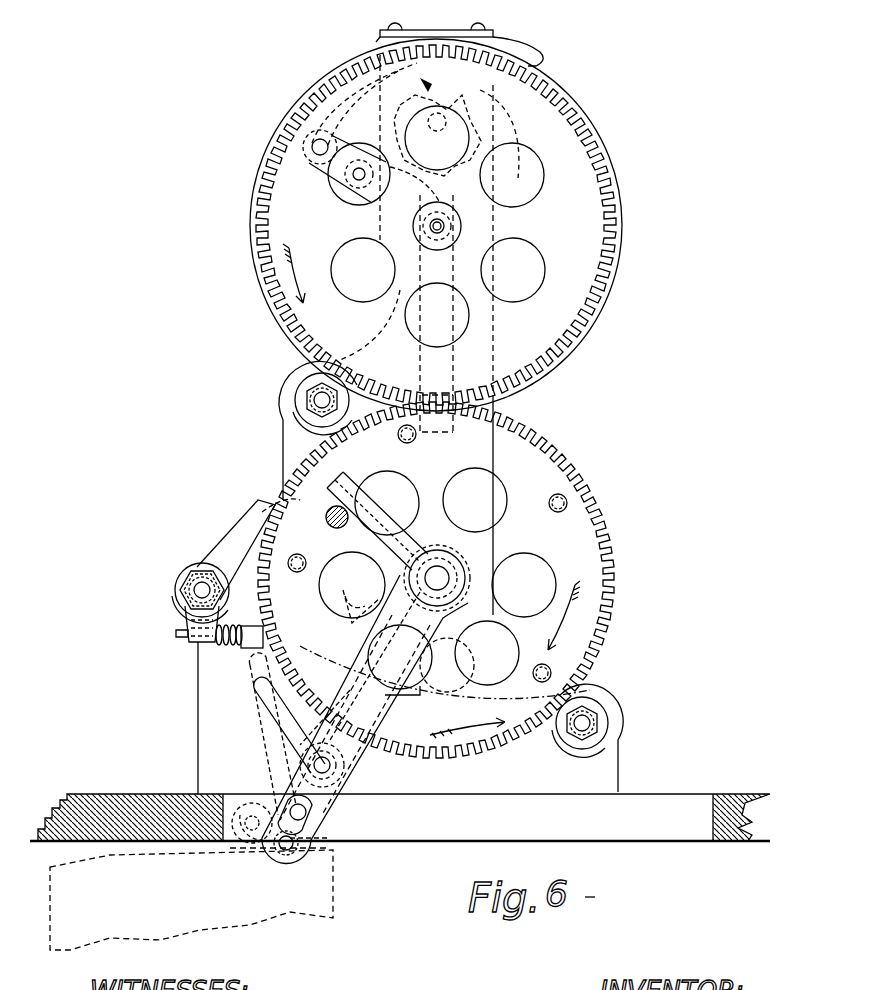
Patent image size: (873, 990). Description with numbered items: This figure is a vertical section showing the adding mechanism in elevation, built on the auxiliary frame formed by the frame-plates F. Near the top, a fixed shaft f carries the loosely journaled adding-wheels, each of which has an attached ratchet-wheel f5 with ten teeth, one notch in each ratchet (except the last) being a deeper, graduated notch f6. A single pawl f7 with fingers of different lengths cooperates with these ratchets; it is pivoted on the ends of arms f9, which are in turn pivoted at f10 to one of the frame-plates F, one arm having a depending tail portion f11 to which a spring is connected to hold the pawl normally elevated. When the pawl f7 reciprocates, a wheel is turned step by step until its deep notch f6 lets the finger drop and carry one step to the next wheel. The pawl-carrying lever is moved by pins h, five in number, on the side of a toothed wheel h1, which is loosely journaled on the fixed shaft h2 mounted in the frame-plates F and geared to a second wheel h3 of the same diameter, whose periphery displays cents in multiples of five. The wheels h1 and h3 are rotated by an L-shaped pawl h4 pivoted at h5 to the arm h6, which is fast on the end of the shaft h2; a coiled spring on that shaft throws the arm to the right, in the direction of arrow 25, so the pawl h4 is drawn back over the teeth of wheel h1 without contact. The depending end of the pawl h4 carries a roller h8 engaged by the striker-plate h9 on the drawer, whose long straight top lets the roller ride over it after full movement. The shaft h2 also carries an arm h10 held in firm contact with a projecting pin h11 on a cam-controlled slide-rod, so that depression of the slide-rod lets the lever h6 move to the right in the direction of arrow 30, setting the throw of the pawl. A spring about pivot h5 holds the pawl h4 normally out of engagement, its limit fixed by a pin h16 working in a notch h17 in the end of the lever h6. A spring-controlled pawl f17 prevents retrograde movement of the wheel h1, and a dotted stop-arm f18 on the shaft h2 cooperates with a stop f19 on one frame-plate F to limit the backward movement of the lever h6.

The fixed shaft f is at (447, 127).
The ratchet-wheel f5 is at (474, 107).
The deep notch f6 is at (410, 96).
The pawl f7 is at (333, 94).
The arms f9 is at (382, 212).
The pivot f10 is at (449, 226).
The depending tail portion f11 is at (425, 318).
The spring-controlled pawl f17 is at (235, 522).
The stop-arm f18 is at (352, 587).
The stop f19 is at (443, 664).
The pins h is at (398, 437).
The toothed wheel h1 is at (587, 570).
The fixed shaft h2 is at (446, 576).
The second wheel h3 is at (578, 236).
The L-shaped pawl h4 is at (275, 718).
The pivot h5 is at (335, 765).
The arm h6 is at (395, 696).
The roller h8 is at (306, 866).
The striker-plate h9 is at (115, 858).
The arm h10 is at (380, 512).
The projecting pin h11 is at (326, 517).
The pin h16 is at (312, 815).
The notch h17 is at (283, 810).
The arrow 25 is at (329, 827).
The arrow 30 is at (467, 720).
The frame-plates F is at (400, 601).